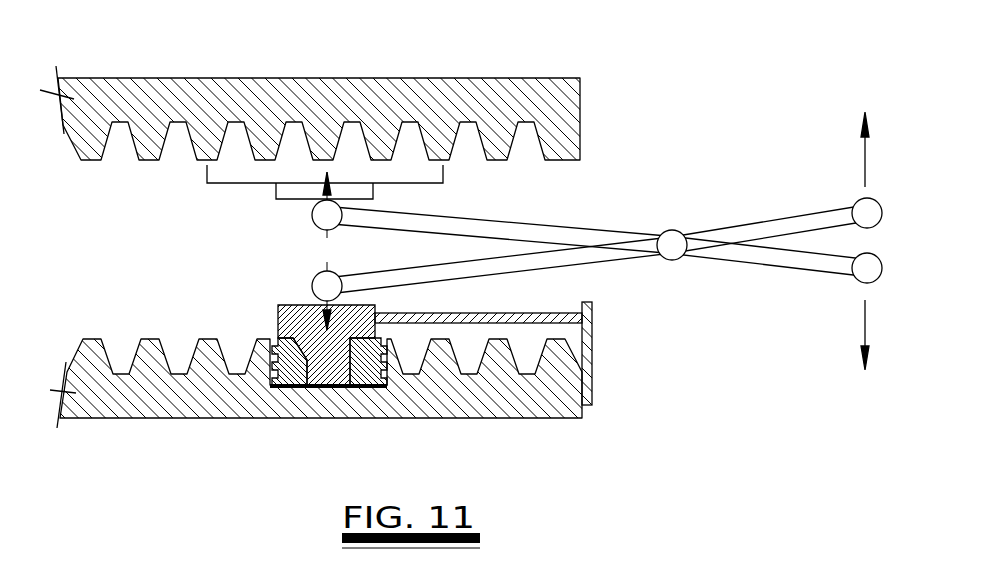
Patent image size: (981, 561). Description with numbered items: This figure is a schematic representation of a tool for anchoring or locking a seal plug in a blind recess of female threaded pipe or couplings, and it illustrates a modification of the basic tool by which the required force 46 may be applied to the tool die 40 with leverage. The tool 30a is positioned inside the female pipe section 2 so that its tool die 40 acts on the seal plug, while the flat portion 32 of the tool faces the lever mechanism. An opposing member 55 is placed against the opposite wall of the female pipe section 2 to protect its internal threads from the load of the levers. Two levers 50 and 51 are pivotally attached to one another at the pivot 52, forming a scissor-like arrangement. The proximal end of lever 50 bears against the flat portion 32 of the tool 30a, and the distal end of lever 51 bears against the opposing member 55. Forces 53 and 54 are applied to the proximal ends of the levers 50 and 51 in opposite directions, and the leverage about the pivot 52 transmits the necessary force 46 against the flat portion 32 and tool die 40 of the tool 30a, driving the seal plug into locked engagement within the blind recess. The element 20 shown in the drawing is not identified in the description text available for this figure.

The female pipe section 2 is at (412, 78).
The opposing member 55 is at (265, 175).
The force 46 is at (326, 251).
The flat portion 32 is at (302, 302).
The tool die 40 is at (273, 332).
The serrated engaging member 20 is at (286, 365).
The tool 30a is at (597, 242).
The lever 50 is at (817, 217).
The lever 51 is at (782, 257).
The pivot 52 is at (671, 243).
The force 53 is at (864, 134).
The force 54 is at (864, 351).